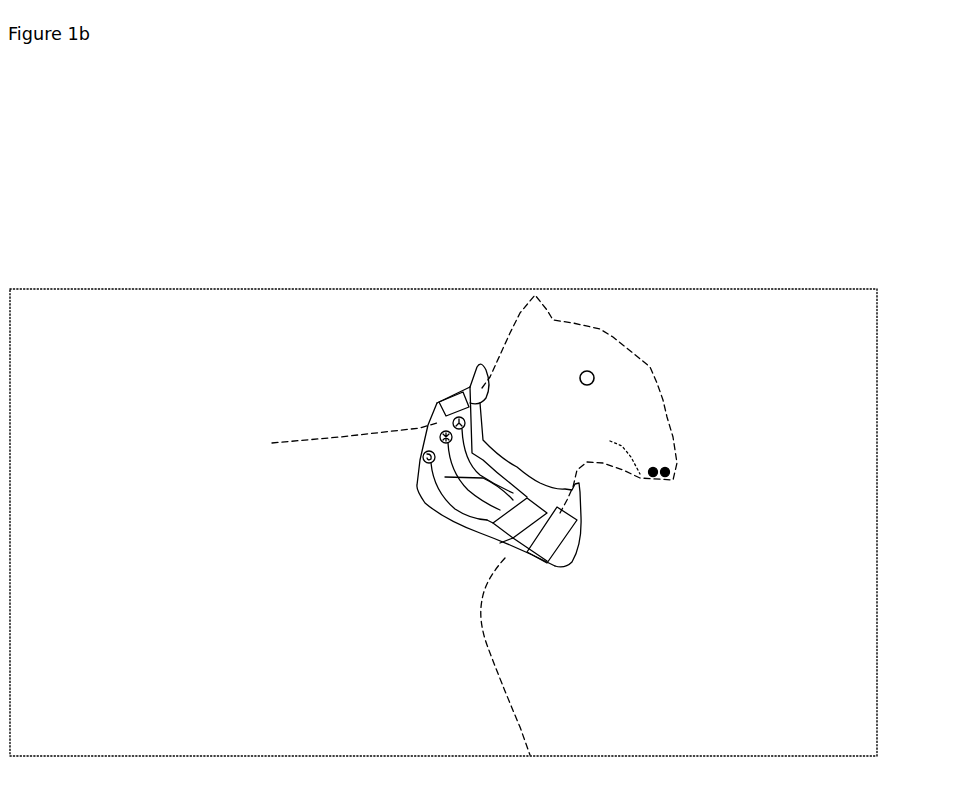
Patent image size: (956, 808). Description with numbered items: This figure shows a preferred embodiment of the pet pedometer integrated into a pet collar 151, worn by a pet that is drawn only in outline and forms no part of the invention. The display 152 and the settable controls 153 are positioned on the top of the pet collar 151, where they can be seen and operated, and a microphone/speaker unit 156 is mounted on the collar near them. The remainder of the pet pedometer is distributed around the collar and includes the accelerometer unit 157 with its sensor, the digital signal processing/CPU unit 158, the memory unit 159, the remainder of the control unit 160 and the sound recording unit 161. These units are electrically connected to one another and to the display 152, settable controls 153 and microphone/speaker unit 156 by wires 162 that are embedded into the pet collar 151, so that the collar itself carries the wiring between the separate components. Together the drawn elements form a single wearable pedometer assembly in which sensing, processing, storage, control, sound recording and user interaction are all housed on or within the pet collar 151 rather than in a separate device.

The pet collar 151 is at (503, 458).
The display 152 is at (440, 402).
The settable controls 153 is at (440, 435).
The microphone/speaker unit 156 is at (424, 461).
The wires 162 is at (500, 487).
The accelerometer unit 157 is at (490, 513).
The digital signal processing/CPU unit 158 is at (493, 523).
The memory unit 159 is at (512, 537).
The remainder of control unit 160 is at (563, 532).
The sound recording unit 161 is at (553, 550).